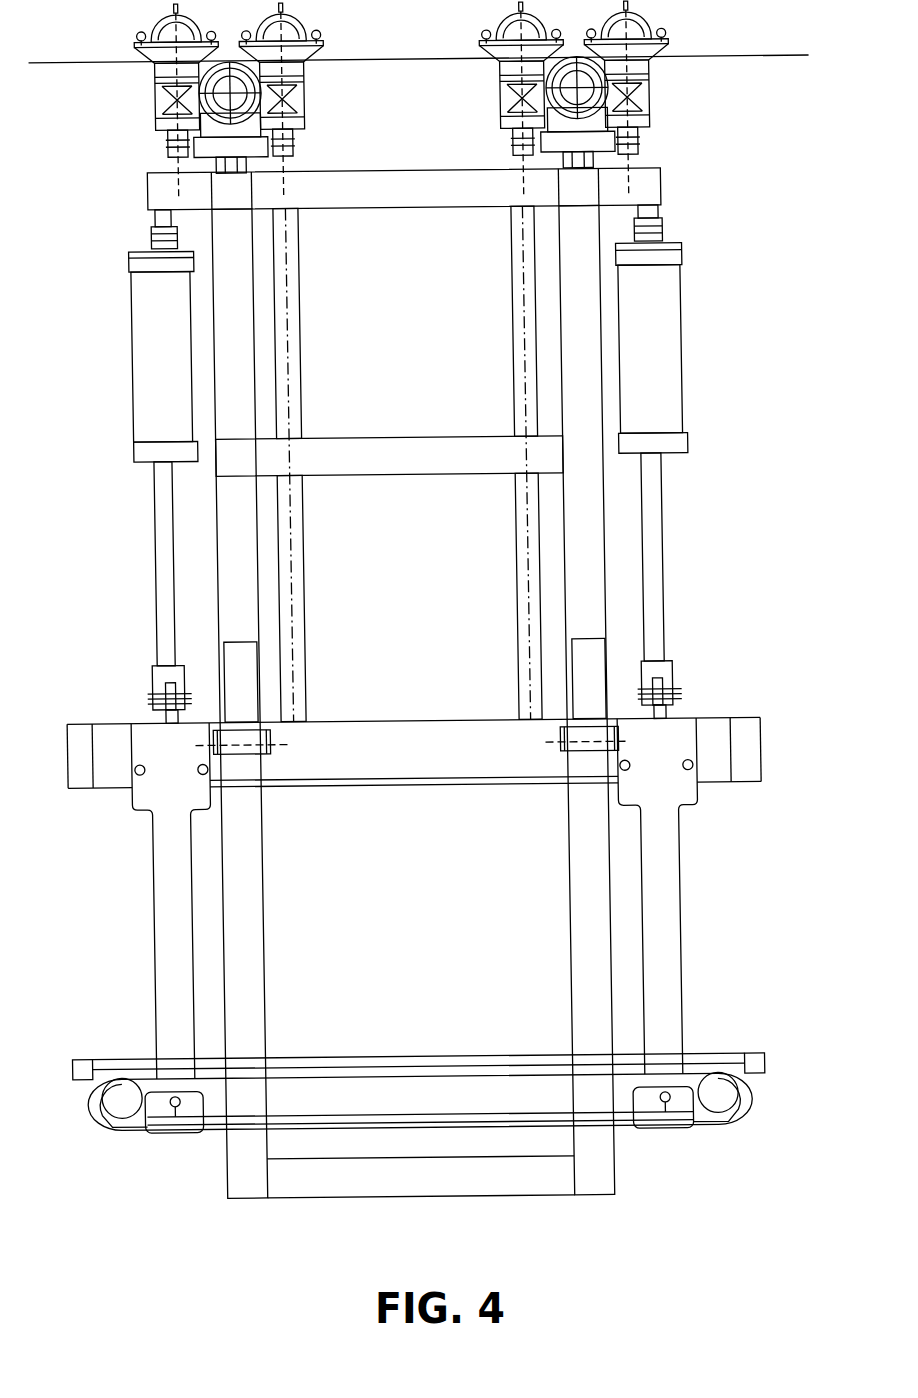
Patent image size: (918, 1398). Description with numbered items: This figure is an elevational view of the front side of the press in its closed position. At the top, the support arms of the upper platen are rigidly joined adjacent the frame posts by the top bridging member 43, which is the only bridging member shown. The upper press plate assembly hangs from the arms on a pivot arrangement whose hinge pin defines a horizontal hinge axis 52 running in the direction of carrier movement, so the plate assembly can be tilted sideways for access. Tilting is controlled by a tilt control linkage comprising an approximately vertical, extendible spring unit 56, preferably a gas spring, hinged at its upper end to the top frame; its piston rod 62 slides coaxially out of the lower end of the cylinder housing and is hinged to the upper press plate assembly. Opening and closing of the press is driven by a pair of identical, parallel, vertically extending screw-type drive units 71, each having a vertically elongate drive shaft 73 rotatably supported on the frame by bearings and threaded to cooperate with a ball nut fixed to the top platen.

The bridging member 43 is at (410, 447).
The hinge axis 52 is at (277, 744).
The spring unit 56 is at (137, 349).
The piston rod 62 is at (163, 567).
The screw-type drive unit 71 is at (310, 290).
The drive shaft 73 is at (308, 604).